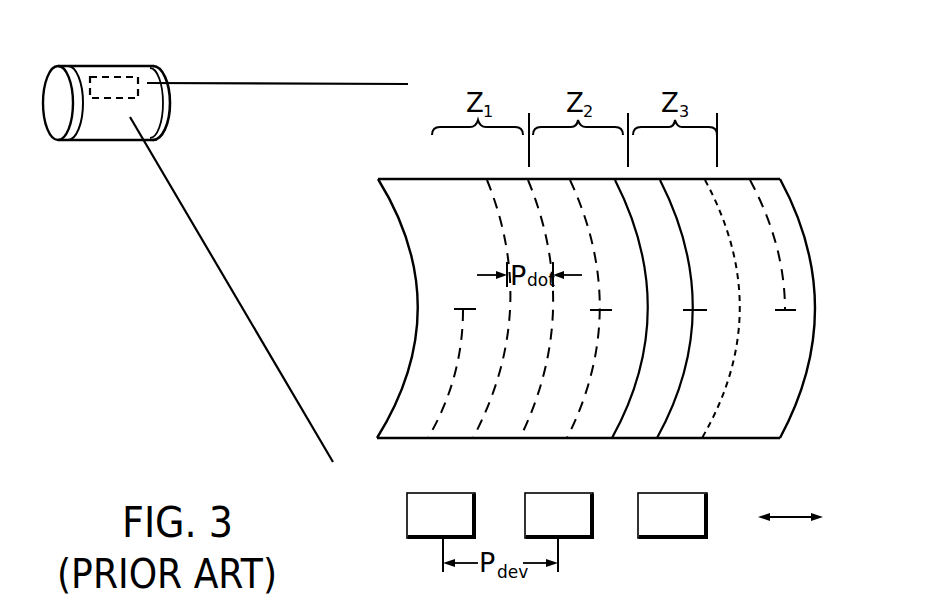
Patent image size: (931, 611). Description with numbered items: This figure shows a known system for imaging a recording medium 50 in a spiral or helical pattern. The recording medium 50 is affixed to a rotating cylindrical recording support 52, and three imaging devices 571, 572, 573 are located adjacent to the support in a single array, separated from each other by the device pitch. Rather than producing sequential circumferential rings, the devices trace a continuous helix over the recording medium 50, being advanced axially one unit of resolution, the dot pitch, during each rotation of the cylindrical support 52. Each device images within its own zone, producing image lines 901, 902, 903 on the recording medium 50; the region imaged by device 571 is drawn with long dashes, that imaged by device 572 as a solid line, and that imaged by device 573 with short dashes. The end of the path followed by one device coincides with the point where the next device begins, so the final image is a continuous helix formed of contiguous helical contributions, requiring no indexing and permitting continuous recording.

The recording medium 50 is at (108, 112).
The cylindrical recording support 52 is at (78, 140).
The first image line 901 is at (485, 193).
The second image line 902 is at (615, 180).
The third image line 903 is at (750, 180).
The first imaging device 571 is at (407, 538).
The second imaging device 572 is at (593, 538).
The third imaging device 573 is at (707, 538).